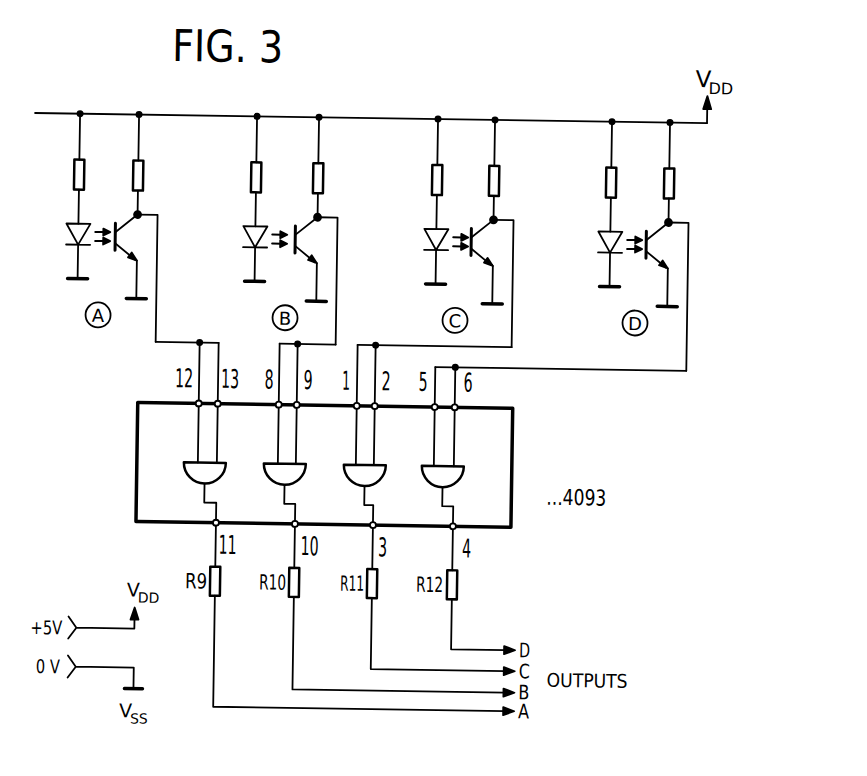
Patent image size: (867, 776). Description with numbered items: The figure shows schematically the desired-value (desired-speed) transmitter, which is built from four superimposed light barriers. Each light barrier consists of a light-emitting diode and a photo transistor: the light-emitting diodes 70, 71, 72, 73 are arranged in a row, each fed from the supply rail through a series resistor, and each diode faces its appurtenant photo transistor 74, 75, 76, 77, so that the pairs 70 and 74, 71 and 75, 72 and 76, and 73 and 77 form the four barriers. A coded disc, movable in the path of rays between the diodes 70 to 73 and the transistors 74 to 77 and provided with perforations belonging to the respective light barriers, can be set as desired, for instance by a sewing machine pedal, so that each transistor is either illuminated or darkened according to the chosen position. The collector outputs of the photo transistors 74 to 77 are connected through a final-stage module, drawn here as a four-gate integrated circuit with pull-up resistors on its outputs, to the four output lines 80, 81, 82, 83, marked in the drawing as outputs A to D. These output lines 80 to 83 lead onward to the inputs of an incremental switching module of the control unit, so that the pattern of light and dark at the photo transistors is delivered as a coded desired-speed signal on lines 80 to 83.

The light-emitting diode 70 is at (58, 229).
The light-emitting diode 71 is at (235, 229).
The light-emitting diode 72 is at (416, 229).
The light-emitting diode 73 is at (590, 229).
The photo transistor 74 is at (121, 226).
The photo transistor 75 is at (301, 226).
The photo transistor 76 is at (477, 226).
The photo transistor 77 is at (652, 226).
The output line 80 is at (265, 711).
The output line 81 is at (305, 691).
The output line 82 is at (389, 670).
The output line 83 is at (463, 649).